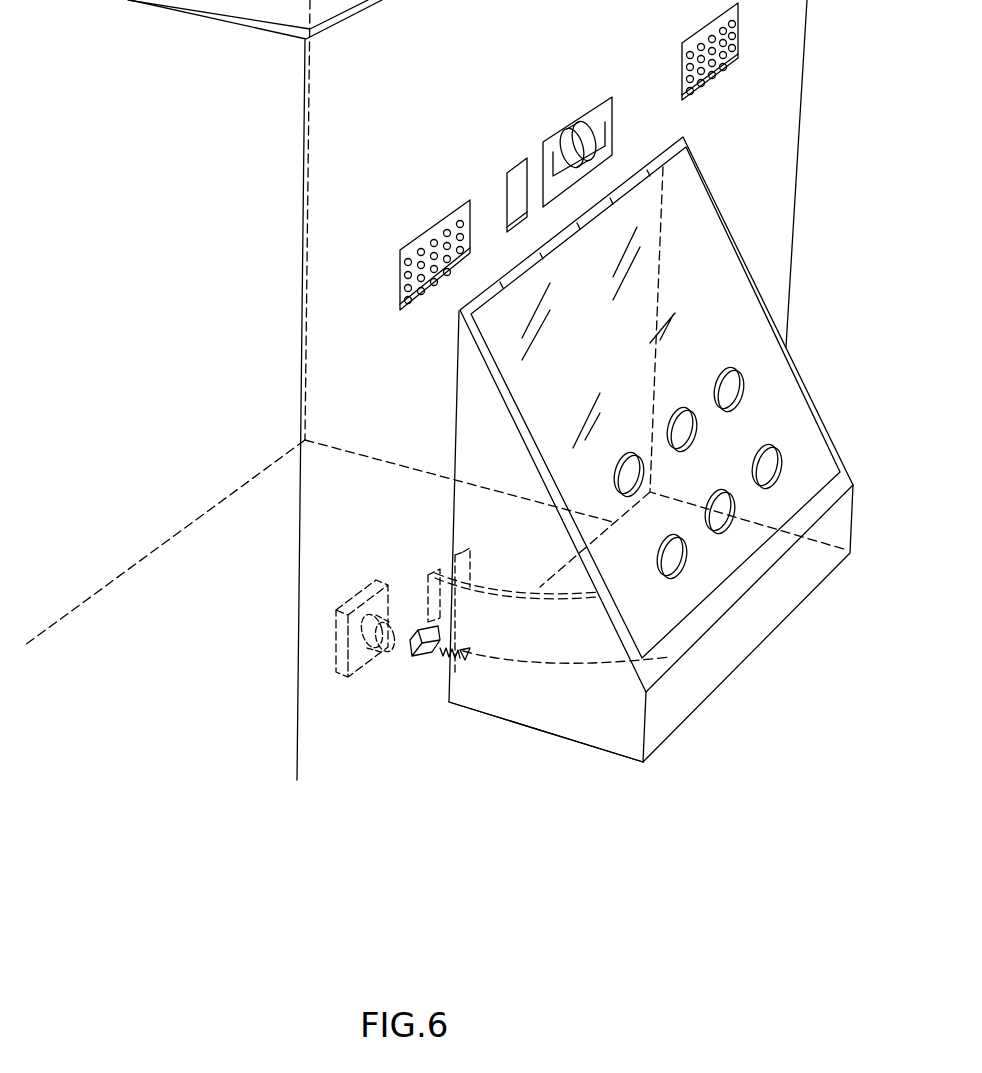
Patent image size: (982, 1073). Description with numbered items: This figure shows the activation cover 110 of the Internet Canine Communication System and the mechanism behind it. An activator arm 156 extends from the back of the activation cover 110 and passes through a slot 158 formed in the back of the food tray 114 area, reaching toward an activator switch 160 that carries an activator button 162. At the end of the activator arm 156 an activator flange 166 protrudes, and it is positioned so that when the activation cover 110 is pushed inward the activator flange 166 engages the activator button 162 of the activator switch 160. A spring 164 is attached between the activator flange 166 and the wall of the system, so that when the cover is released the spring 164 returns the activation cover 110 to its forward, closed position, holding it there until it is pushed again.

The activation cover 110 is at (710, 307).
The food tray 114 is at (745, 624).
The activator arm 156 is at (597, 748).
The slot 158 is at (463, 650).
The activator switch 160 is at (343, 628).
The activator button 162 is at (370, 648).
The spring 164 is at (436, 657).
The activator flange 166 is at (413, 655).